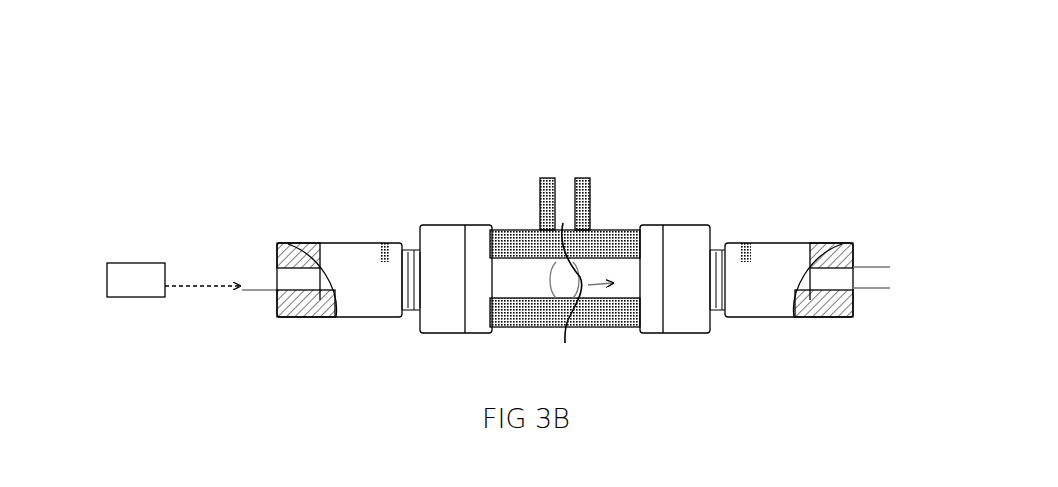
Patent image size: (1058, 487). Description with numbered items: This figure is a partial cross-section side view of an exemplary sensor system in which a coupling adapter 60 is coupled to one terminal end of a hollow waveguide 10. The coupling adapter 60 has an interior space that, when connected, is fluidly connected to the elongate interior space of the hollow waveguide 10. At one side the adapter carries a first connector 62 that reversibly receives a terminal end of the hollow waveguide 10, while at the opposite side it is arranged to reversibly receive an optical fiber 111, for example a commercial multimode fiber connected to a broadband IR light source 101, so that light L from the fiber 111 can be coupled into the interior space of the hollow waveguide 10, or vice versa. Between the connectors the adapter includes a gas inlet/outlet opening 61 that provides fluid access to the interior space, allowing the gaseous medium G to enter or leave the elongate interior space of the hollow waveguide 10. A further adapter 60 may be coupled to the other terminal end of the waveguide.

The hollow waveguide 10 is at (880, 306).
The coupling adapter 60 is at (631, 100).
The gas inlet/outlet opening 61 is at (550, 157).
The first connector 62 is at (368, 205).
The broadband IR light source 101 is at (136, 280).
The optical fiber 111 is at (255, 258).
The light L is at (205, 287).
The gaseous medium G is at (585, 299).